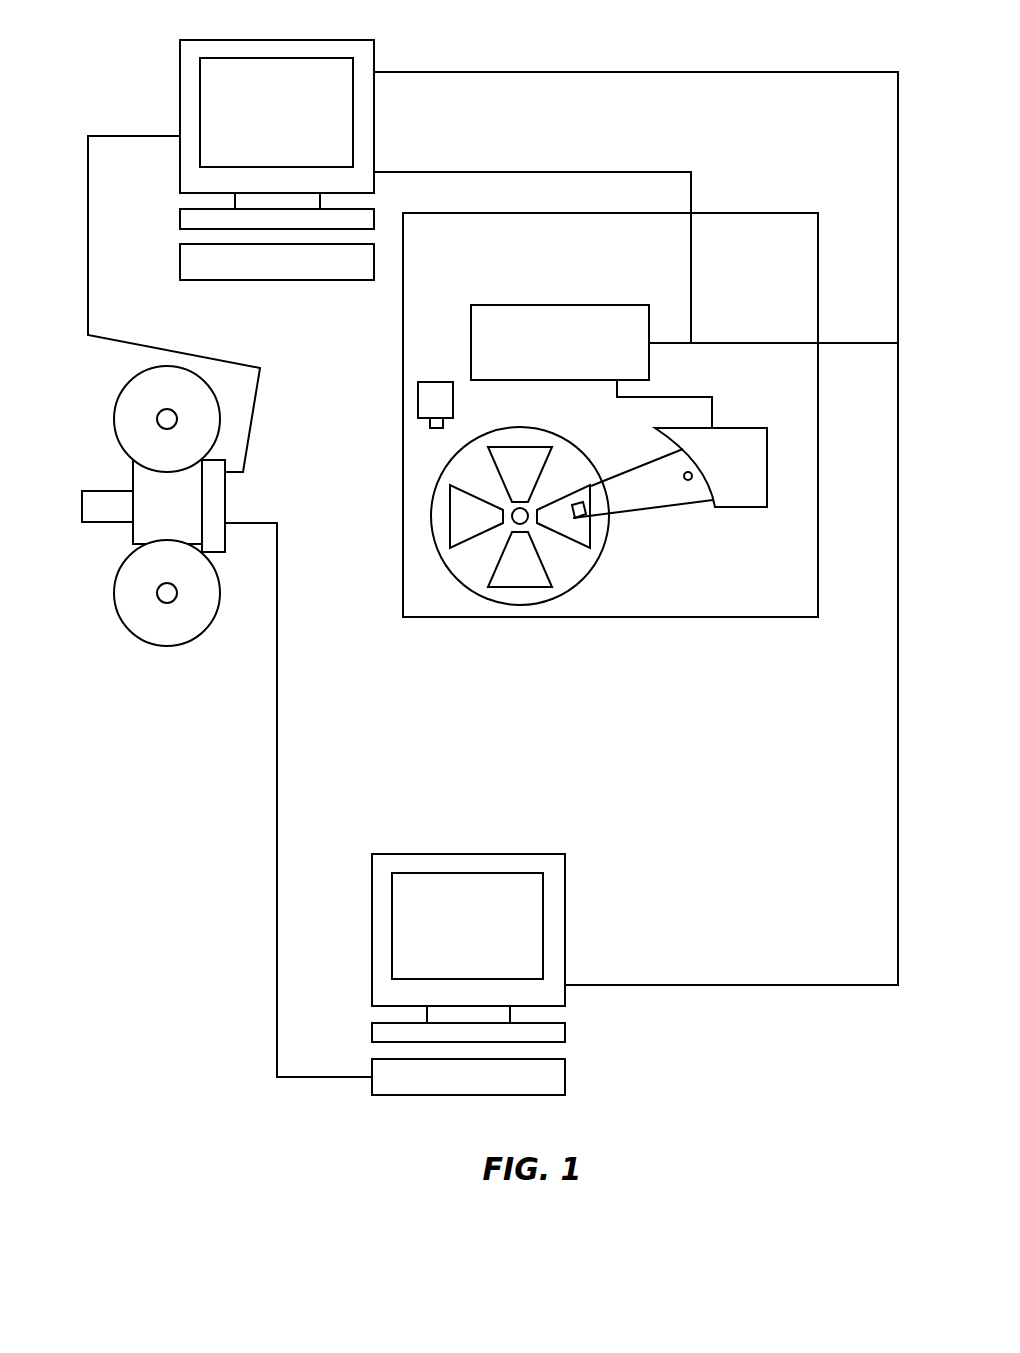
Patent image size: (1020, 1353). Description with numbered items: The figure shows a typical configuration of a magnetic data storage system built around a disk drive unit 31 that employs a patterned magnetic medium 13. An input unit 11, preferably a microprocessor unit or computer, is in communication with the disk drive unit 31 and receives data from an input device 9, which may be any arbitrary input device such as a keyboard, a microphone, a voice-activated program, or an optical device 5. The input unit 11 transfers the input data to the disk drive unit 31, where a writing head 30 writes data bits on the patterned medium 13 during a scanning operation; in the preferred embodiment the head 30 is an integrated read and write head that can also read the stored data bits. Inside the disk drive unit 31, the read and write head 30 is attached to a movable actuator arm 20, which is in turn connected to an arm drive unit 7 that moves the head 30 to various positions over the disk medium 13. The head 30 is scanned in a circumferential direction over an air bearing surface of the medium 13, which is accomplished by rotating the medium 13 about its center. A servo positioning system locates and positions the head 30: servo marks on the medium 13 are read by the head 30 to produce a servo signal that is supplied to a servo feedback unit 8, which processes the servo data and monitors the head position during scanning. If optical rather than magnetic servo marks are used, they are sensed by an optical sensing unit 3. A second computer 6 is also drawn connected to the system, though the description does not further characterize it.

The input unit 11 is at (374, 56).
The input device 9 is at (270, 280).
The optical device 5 is at (226, 503).
The disk drive unit 31 is at (392, 380).
The optical sensing unit 3 is at (434, 382).
The servo feedback unit 8 is at (557, 305).
The patterned magnetic medium 13 is at (520, 606).
The read and write head 30 is at (577, 519).
The movable actuator arm 20 is at (648, 508).
The arm drive unit 7 is at (743, 508).
The second computer 6 is at (565, 908).